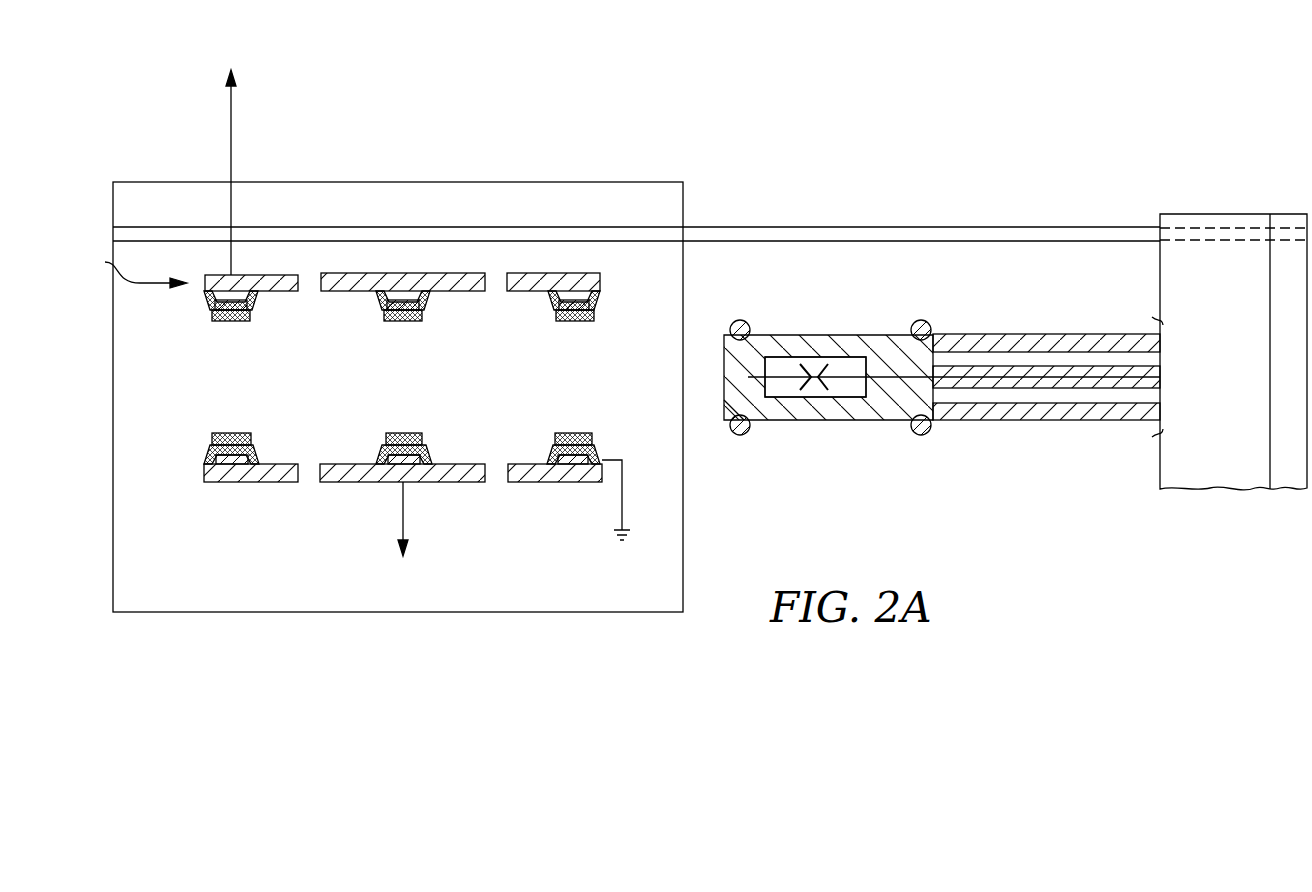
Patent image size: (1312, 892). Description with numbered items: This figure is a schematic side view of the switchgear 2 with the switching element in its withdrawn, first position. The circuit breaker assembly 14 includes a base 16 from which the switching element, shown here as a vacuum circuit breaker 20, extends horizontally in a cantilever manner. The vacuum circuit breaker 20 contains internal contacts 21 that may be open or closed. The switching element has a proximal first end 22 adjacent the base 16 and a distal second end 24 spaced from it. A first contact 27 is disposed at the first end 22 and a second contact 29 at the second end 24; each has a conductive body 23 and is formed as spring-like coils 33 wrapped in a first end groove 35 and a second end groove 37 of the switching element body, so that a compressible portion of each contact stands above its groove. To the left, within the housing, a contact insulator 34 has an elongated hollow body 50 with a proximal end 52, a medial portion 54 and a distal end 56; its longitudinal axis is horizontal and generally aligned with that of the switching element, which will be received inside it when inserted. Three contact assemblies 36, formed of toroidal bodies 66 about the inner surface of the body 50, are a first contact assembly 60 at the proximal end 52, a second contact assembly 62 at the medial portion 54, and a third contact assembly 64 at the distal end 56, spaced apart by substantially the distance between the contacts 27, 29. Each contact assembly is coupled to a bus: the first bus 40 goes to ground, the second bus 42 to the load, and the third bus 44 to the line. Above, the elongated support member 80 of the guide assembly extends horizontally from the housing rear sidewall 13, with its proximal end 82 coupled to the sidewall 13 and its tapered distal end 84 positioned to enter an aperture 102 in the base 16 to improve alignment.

The circuit breaker assembly 2 is at (417, 173).
The housing assembly rear sidewall 13 is at (113, 357).
The circuit breaker assembly 14 is at (924, 309).
The circuit breaker assembly base 16 is at (1210, 333).
The vacuum circuit breaker 20 is at (924, 377).
The internal contacts 21 is at (815, 398).
The switching element first end 22 is at (940, 420).
The conductive body 23 is at (748, 324).
The switching element second end 24 is at (725, 403).
The first contact 27 is at (914, 322).
The second contact 29 is at (747, 300).
The spring-like coils 33 is at (742, 437).
The contact insulator 34 is at (131, 267).
The first end groove 35 is at (950, 337).
The contact assembly 36 is at (222, 322).
The second end groove 37 is at (730, 340).
The first bus 40 is at (622, 510).
The second bus 42 is at (405, 520).
The third bus 44 is at (231, 127).
The contact insulator body 50 is at (345, 278).
The contact insulator proximal end 52 is at (590, 275).
The contact insulator medial portion 54 is at (393, 267).
The contact insulator distal end 56 is at (205, 293).
The first contact assembly 60 is at (600, 306).
The second contact assembly 62 is at (377, 306).
The third contact assembly 64 is at (213, 306).
The toroidal bodies 66 is at (215, 433).
The support member 80 is at (752, 228).
The support member proximal end 82 is at (636, 209).
The support member distal end 84 is at (1210, 237).
The aperture 102 is at (1222, 242).